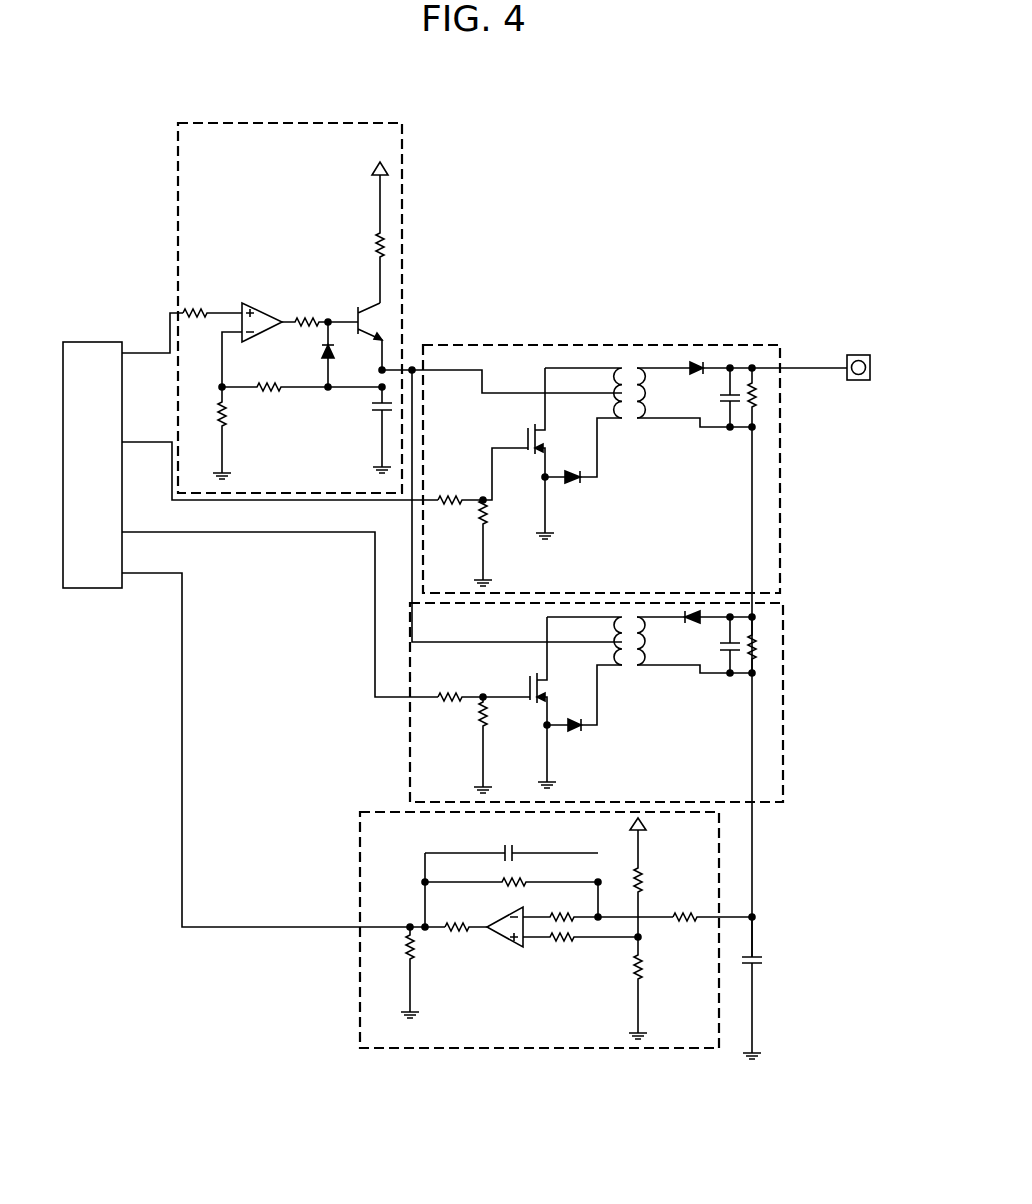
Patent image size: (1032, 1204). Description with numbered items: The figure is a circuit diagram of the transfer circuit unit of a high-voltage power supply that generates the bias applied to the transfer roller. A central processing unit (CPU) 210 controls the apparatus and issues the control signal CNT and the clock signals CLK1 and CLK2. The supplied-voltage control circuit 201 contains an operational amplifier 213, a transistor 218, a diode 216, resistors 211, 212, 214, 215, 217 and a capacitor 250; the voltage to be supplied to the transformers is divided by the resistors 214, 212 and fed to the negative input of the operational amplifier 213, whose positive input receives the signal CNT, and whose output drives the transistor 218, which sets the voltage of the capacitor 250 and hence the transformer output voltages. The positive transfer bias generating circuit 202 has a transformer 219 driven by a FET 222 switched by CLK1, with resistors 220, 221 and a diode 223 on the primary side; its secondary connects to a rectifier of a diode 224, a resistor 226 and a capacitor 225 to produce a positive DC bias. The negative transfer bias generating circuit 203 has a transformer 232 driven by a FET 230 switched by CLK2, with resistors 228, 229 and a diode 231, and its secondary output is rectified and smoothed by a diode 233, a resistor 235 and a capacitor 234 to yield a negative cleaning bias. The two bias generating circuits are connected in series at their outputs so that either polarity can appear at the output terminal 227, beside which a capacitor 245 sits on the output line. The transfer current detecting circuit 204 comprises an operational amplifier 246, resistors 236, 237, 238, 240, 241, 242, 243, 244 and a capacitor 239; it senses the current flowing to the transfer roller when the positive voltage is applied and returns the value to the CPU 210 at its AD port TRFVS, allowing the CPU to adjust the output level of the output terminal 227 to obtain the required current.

The supplied-voltage control circuit 201 is at (404, 127).
The positive transfer bias generating circuit 202 is at (781, 349).
The negative transfer bias generating circuit 203 is at (782, 626).
The transfer current detecting circuit 204 is at (736, 850).
The central processing unit (CPU) 210 is at (88, 341).
The resistor 211 is at (197, 306).
The resistor 212 is at (225, 417).
The operational amplifier 213 is at (252, 306).
The resistor 214 is at (268, 391).
The resistor 215 is at (301, 309).
The diode 216 is at (322, 356).
The resistor 217 is at (371, 247).
The transistor 218 is at (378, 316).
The transformer 219 is at (642, 365).
The resistor 220 is at (444, 491).
The resistor 221 is at (480, 531).
The FET 222 is at (525, 432).
The diode 223 is at (574, 483).
The diode 224 is at (700, 362).
The capacitor 225 is at (724, 408).
The resistor 226 is at (760, 404).
The output terminal 227 is at (865, 355).
The resistor 228 is at (446, 697).
The resistor 229 is at (481, 728).
The FET 230 is at (530, 682).
The diode 231 is at (580, 731).
The transformer 232 is at (631, 668).
The diode 233 is at (686, 612).
The capacitor 234 is at (728, 658).
The resistor 235 is at (762, 640).
The resistor 236 is at (407, 950).
The resistor 237 is at (465, 941).
The resistor 238 is at (500, 879).
The capacitor 239 is at (503, 850).
The resistor 240 is at (564, 912).
The resistor 241 is at (560, 943).
The resistor 242 is at (648, 875).
The resistor 243 is at (684, 911).
The resistor 244 is at (636, 970).
The capacitor 245 is at (764, 965).
The operational amplifier 246 is at (506, 952).
The capacitor 250 is at (376, 417).